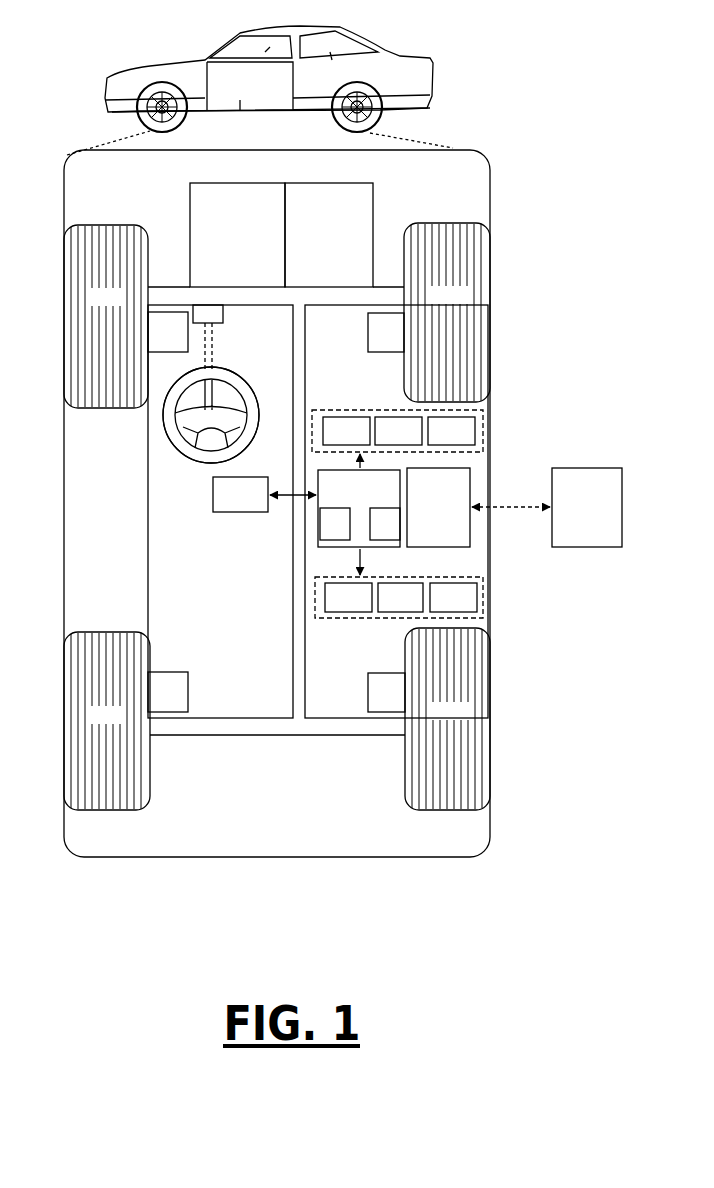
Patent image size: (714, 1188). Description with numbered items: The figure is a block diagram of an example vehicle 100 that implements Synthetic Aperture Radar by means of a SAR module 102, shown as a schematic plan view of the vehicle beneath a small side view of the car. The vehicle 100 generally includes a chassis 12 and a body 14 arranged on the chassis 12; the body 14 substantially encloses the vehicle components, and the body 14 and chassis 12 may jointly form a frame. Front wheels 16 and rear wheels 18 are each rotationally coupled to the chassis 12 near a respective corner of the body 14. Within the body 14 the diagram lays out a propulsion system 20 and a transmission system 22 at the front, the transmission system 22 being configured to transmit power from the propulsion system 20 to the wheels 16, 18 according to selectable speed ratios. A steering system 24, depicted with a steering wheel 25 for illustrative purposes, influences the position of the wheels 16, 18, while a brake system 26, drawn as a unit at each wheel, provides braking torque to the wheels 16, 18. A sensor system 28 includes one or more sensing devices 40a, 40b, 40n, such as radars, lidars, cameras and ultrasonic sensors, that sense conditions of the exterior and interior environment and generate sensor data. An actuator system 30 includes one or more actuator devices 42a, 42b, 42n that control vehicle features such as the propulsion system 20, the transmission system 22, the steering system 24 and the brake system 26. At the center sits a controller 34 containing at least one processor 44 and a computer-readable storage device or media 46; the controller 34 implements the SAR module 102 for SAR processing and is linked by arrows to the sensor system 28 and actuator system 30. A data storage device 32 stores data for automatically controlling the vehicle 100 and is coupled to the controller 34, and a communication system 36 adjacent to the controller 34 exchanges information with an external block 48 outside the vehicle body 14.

The vehicle 100 is at (115, 64).
The SAR module 102 is at (514, 352).
The chassis 12 is at (302, 737).
The body 14 is at (64, 473).
The front wheels 16 is at (277, 315).
The rear wheels 18 is at (277, 719).
The propulsion system 20 is at (237, 235).
The transmission system 22 is at (329, 235).
The steering system 24 is at (187, 468).
The steering wheel 25 is at (240, 372).
The brake system 26 is at (276, 512).
The sensor system 28 is at (355, 408).
The actuator system 30 is at (340, 620).
The data storage device 32 is at (240, 494).
The controller 34 is at (359, 508).
The communication system 36 is at (438, 507).
The sensing device 40a is at (346, 431).
The sensing device 40b is at (398, 431).
The sensing device 40n is at (451, 431).
The actuator device 42a is at (348, 597).
The actuator device 42b is at (400, 597).
The actuator device 42n is at (453, 597).
The processor 44 is at (335, 524).
The computer-readable storage device or media 46 is at (385, 524).
The remote system / entity 48 is at (587, 507).